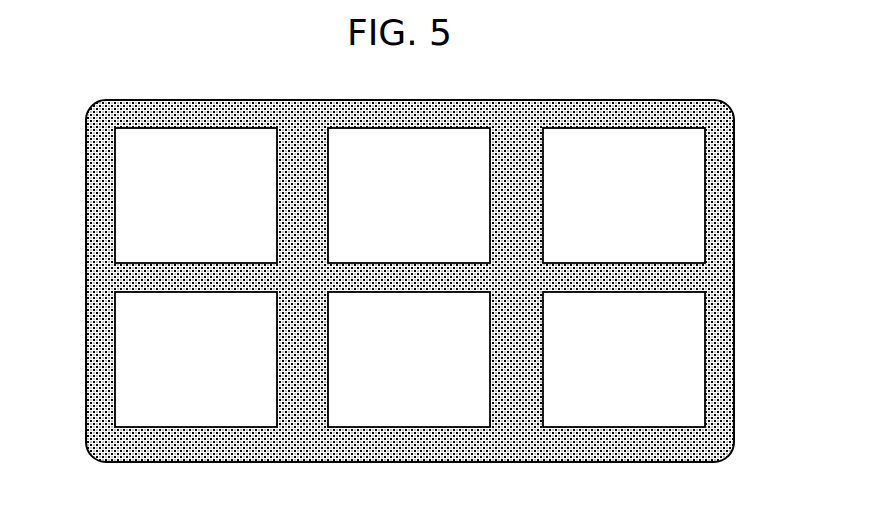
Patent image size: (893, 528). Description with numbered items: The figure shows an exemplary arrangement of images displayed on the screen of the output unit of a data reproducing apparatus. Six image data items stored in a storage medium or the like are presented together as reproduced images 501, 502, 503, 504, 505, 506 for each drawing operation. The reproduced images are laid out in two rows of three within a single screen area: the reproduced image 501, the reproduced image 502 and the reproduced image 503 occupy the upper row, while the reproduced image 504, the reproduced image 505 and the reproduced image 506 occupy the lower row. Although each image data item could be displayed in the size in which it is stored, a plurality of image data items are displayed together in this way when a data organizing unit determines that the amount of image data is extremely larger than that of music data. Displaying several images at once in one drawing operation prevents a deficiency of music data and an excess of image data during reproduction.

The reproduced image 501 is at (115, 196).
The reproduced image 502 is at (407, 128).
The reproduced image 503 is at (705, 192).
The reproduced image 504 is at (115, 377).
The reproduced image 505 is at (409, 427).
The reproduced image 506 is at (705, 371).